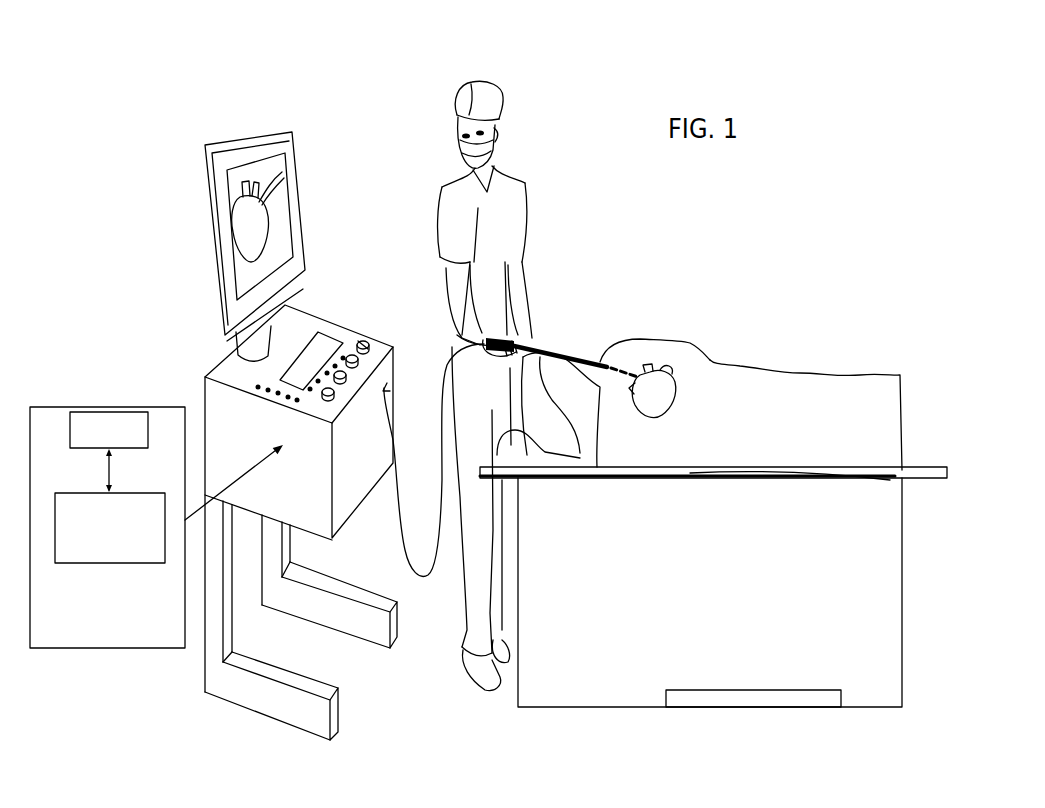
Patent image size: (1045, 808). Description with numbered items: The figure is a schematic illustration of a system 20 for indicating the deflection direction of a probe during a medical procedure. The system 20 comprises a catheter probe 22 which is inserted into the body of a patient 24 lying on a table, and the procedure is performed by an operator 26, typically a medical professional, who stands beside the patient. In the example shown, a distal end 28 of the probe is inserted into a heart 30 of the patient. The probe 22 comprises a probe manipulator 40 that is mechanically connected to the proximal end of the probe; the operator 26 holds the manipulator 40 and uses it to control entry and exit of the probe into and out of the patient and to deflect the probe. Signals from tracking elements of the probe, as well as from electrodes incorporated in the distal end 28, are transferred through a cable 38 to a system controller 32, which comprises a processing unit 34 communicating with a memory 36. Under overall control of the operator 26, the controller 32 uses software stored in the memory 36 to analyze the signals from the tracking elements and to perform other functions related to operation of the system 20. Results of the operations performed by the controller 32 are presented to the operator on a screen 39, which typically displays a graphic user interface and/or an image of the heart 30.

The system 20 is at (280, 68).
The catheter probe 22 is at (591, 362).
The patient 24 is at (538, 448).
The operator 26 is at (504, 228).
The distal end 28 is at (682, 380).
The heart 30 is at (661, 370).
The system controller 32 is at (103, 407).
The processing unit 34 is at (152, 493).
The memory 36 is at (90, 410).
The cable 38 is at (440, 372).
The screen 39 is at (275, 131).
The probe manipulator 40 is at (522, 340).